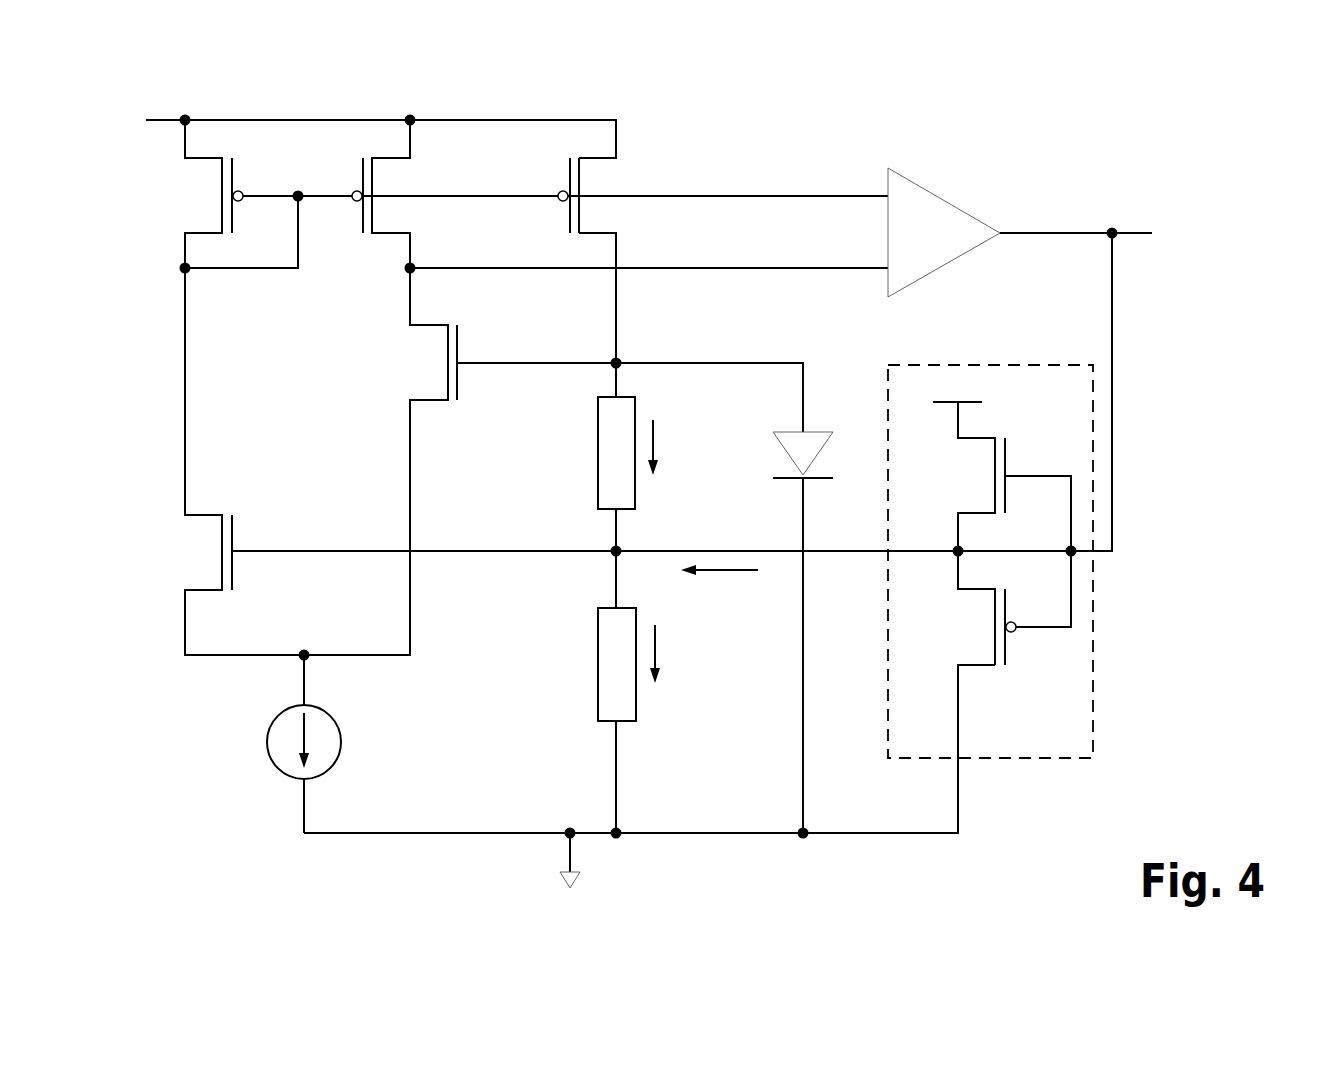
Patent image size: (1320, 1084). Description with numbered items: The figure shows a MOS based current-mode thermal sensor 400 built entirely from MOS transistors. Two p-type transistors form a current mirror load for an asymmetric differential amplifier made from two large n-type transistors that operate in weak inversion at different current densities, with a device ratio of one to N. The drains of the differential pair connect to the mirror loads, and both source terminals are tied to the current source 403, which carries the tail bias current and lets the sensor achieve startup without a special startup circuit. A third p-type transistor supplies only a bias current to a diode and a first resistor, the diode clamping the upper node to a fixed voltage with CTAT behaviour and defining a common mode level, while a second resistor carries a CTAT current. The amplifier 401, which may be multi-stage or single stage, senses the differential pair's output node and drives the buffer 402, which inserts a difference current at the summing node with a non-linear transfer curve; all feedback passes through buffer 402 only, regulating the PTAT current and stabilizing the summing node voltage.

The MOS based current-mode thermal sensor 400 is at (994, 131).
The amplifier 401 is at (944, 232).
The buffer 402 is at (990, 561).
The current source 403 is at (318, 703).